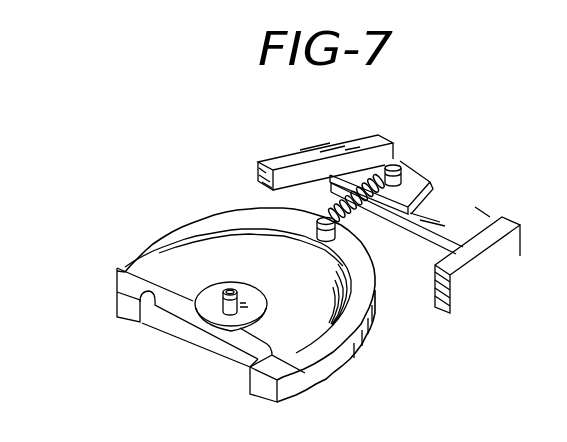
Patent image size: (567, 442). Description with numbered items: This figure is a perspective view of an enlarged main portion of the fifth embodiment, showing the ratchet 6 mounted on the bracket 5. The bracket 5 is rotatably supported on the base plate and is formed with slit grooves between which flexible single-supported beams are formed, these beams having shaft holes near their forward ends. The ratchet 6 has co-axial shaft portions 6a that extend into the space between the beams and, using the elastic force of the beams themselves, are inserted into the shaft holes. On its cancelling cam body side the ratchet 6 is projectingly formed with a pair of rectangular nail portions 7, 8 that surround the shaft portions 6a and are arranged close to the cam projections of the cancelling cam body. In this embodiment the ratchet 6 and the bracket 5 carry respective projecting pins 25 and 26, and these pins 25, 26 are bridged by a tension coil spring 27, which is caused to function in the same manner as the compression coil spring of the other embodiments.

The bracket 5 is at (320, 145).
The ratchet 6 is at (193, 220).
The shaft portion 6a is at (232, 289).
The nail portion 7 is at (132, 320).
The nail portion 8 is at (258, 386).
The pin 25 is at (325, 216).
The pin 26 is at (397, 165).
The tension coil spring 27 is at (360, 208).